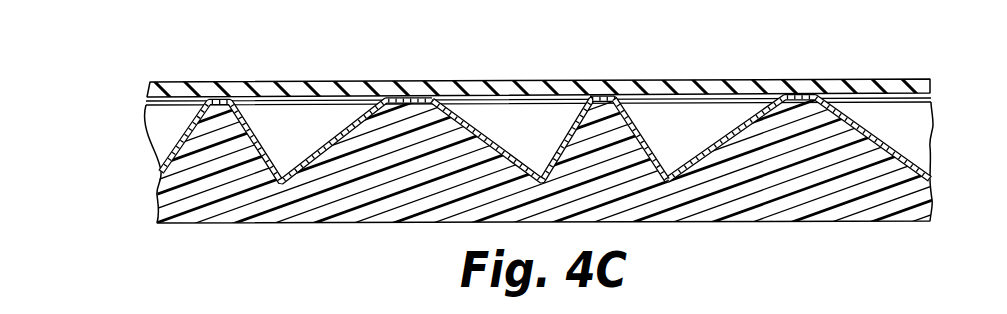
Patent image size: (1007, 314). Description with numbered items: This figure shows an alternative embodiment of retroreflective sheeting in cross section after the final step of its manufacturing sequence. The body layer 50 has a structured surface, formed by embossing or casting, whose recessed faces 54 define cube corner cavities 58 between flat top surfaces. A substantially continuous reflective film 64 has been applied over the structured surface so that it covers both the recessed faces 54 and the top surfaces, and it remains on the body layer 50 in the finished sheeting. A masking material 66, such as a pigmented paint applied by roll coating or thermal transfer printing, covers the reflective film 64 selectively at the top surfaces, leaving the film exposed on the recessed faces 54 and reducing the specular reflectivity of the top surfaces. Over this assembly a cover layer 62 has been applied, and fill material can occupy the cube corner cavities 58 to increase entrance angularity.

The body layer 50 is at (775, 223).
The recessed faces 54 is at (627, 118).
The cube corner cavities 58 is at (521, 128).
The cover layer 62 is at (158, 88).
The continuous reflective film 64 is at (318, 153).
The masking material 66 is at (148, 101).